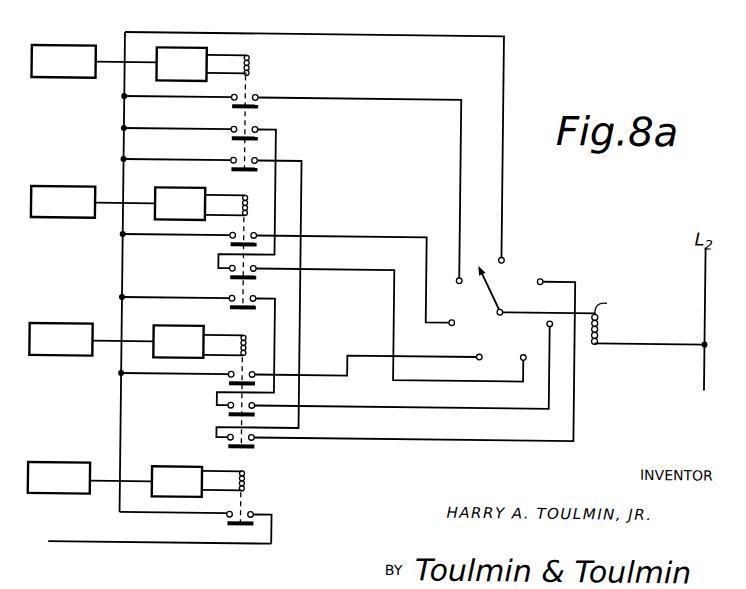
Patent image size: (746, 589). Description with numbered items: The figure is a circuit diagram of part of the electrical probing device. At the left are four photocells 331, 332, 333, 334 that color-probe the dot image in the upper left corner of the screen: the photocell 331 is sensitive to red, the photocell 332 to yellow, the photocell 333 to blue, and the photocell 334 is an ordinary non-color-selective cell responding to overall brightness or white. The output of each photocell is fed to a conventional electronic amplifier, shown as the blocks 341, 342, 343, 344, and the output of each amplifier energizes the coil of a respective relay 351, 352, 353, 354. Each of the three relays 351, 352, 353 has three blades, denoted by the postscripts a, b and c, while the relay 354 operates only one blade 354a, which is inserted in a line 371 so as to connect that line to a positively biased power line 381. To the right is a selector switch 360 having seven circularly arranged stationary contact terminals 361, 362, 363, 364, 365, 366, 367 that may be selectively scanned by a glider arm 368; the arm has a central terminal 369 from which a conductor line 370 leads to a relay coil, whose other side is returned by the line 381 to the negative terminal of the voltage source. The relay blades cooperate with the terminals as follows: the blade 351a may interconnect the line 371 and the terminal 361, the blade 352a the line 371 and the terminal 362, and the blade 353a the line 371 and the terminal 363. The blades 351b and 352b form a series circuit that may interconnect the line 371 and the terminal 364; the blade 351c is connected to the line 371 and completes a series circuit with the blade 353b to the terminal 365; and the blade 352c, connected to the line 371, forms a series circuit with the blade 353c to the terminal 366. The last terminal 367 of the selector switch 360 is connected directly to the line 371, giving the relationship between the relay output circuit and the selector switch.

The photocell 331 is at (44, 46).
The photocell 332 is at (43, 187).
The photocell 333 is at (46, 324).
The photocell 334 is at (49, 463).
The electronic amplifier 341 is at (181, 64).
The electronic amplifier 342 is at (180, 203).
The electronic amplifier 343 is at (178, 341).
The electronic amplifier 344 is at (177, 481).
The relay 351 is at (255, 68).
The relay 352 is at (254, 204).
The relay 353 is at (253, 344).
The relay 354 is at (255, 478).
The blade 351a is at (233, 105).
The blade 351b is at (233, 137).
The blade 351c is at (233, 168).
The blade 352a is at (233, 243).
The blade 352b is at (233, 276).
The blade 352c is at (233, 306).
The blade 353a is at (233, 382).
The blade 353b is at (233, 413).
The blade 353c is at (233, 445).
The blade 354a is at (233, 522).
The selector switch 360 is at (587, 228).
The stationary contact terminal 361 is at (466, 270).
The stationary contact terminal 362 is at (454, 322).
The stationary contact terminal 363 is at (483, 356).
The stationary contact terminal 364 is at (527, 356).
The stationary contact terminal 365 is at (553, 322).
The stationary contact terminal 366 is at (546, 278).
The stationary contact terminal 367 is at (507, 236).
The glider arm 368 is at (493, 284).
The central terminal 369 is at (502, 311).
The conductor line 370 is at (585, 306).
The line 371 is at (125, 374).
The power line 381 is at (124, 543).